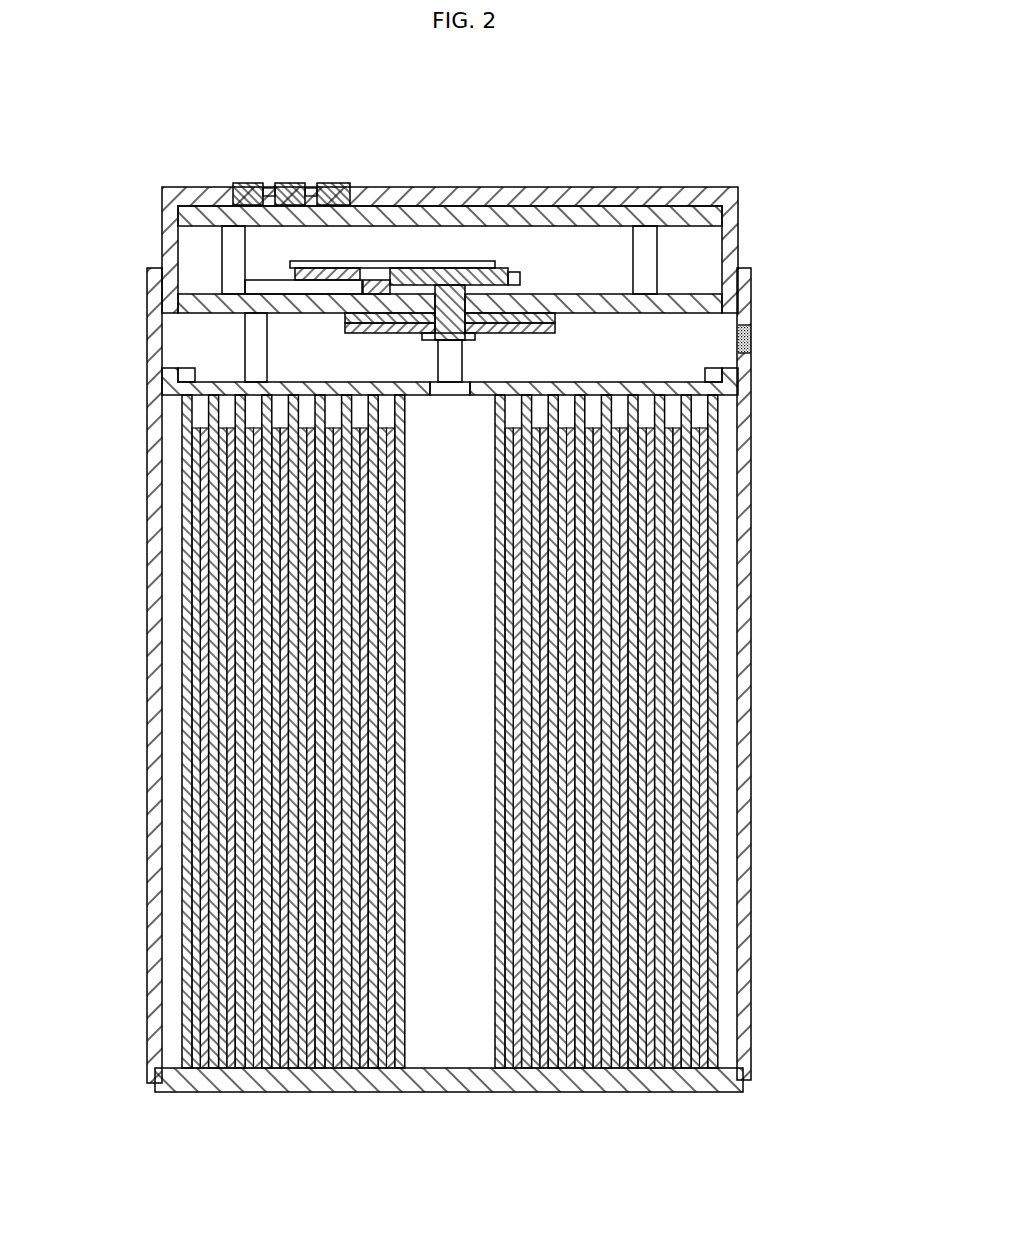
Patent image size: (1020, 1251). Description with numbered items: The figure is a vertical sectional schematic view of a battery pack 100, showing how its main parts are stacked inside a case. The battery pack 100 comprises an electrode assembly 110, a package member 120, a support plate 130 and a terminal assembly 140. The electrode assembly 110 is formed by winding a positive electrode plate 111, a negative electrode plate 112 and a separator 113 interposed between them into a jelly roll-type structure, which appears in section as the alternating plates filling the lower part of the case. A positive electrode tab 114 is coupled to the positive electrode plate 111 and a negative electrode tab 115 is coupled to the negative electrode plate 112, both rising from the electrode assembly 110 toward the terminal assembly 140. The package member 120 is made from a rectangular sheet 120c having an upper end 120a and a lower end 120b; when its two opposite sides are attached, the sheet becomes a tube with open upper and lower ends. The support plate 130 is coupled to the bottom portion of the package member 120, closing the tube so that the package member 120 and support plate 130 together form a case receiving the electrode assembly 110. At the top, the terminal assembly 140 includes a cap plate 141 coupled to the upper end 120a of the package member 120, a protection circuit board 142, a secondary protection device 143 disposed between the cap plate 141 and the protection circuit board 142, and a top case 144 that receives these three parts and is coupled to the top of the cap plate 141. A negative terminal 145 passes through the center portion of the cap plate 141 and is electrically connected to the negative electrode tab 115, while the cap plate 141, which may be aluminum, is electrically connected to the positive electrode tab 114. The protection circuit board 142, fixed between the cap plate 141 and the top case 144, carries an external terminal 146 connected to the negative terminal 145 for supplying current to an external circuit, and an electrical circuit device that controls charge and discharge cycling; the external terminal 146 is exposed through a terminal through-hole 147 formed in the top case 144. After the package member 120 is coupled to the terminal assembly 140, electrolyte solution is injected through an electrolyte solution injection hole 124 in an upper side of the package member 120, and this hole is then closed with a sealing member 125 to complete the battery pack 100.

The battery pack 100 is at (98, 104).
The electrode assembly 110 is at (845, 610).
The positive electrode plate 111 is at (700, 612).
The negative electrode plate 112 is at (675, 708).
The separator 113 is at (685, 660).
The positive electrode tab 114 is at (255, 325).
The negative electrode tab 115 is at (458, 360).
The package member 120 is at (145, 537).
The upper end 120a is at (158, 284).
The lower end 120b is at (155, 1052).
The rectangular sheet 120c is at (157, 597).
The electrolyte solution injection hole 124 is at (753, 333).
The sealing member 125 is at (753, 347).
The support plate 130 is at (558, 1090).
The terminal assembly 140 is at (573, 118).
The cap plate 141 is at (566, 303).
The protection circuit board 142 is at (508, 214).
The secondary protection device 143 is at (345, 268).
The top case 144 is at (448, 200).
The negative terminal 145 is at (378, 334).
The external terminal 146 is at (250, 186).
The terminal through-hole 147 is at (233, 190).